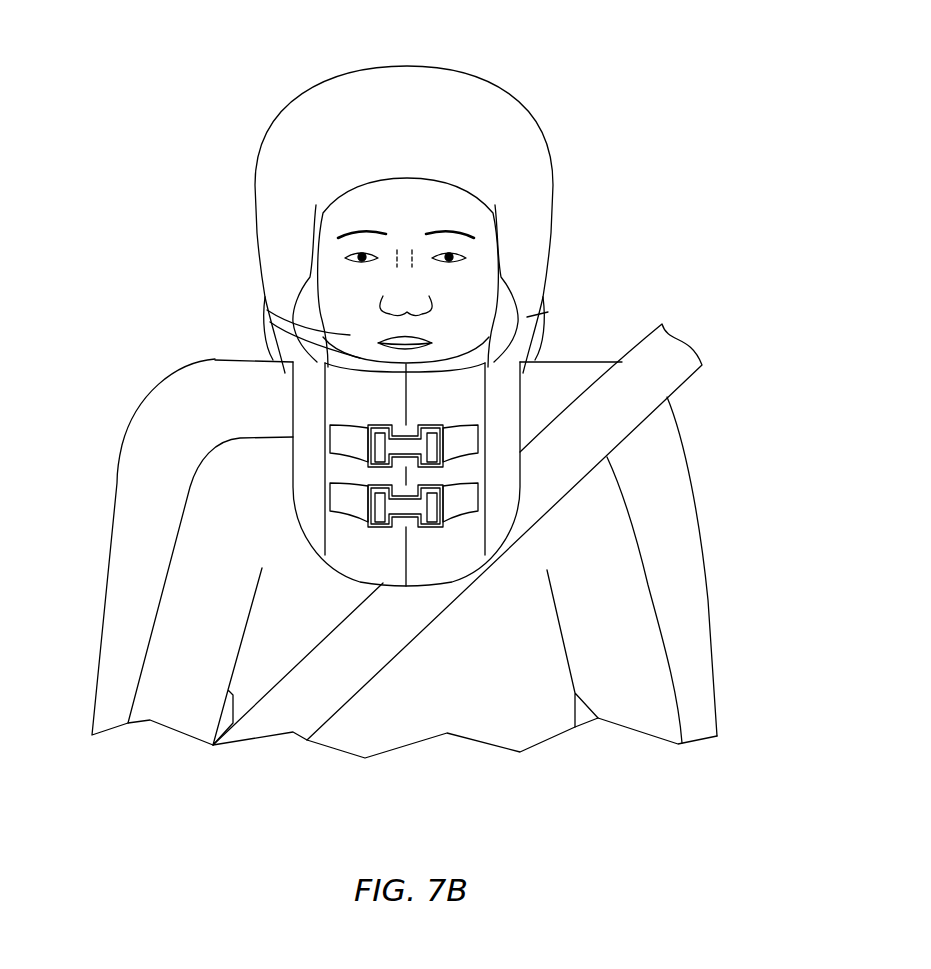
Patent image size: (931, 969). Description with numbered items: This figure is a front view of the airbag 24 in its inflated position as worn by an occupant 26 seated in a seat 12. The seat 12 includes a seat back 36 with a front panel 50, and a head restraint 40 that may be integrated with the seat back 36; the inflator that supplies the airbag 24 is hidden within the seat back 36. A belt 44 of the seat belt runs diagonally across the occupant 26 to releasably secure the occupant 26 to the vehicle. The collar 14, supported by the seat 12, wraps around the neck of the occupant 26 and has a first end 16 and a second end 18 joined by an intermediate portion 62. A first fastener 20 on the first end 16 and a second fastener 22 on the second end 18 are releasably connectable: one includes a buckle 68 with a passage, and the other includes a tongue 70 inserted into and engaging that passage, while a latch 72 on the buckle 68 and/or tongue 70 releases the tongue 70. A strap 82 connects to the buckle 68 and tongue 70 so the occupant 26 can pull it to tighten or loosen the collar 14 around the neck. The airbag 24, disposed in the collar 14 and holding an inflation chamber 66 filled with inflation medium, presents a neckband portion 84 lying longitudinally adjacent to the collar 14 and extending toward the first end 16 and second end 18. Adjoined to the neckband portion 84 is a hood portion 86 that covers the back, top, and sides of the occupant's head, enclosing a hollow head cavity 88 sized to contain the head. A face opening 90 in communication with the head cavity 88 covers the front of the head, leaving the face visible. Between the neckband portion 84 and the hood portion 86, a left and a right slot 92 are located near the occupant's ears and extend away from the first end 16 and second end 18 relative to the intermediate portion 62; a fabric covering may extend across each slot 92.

The seat 12 is at (133, 378).
The collar 14 is at (527, 401).
The first end 16 is at (527, 363).
The second end 18 is at (322, 437).
The first fastener 20 is at (480, 437).
The second fastener 22 is at (329, 440).
The airbag 24 is at (478, 72).
The occupant 26 is at (267, 310).
The seat back 36 is at (701, 520).
The head restraint 40 is at (263, 323).
The belt 44 is at (348, 673).
The front panel 50 is at (140, 509).
The intermediate portion 62 is at (310, 463).
The inflation chamber 66 is at (492, 113).
The buckle 68 is at (445, 505).
The tongue 70 is at (375, 486).
The latch 72 is at (412, 530).
The strap 82 is at (338, 432).
The neckband portion 84 is at (527, 317).
The hood portion 86 is at (372, 106).
The head cavity 88 is at (447, 215).
The face opening 90 is at (367, 206).
The slot 92 is at (307, 305).